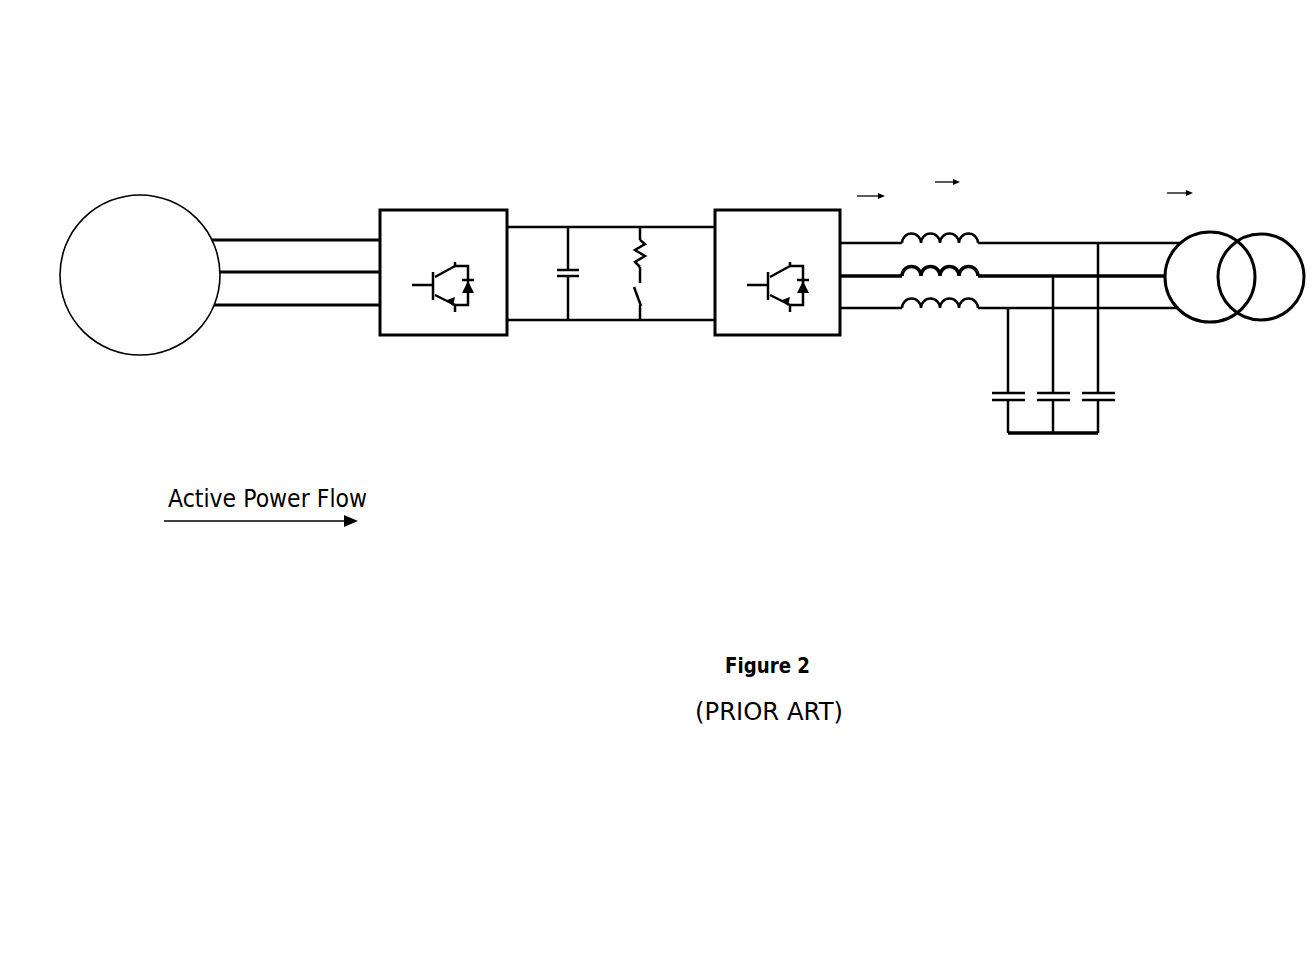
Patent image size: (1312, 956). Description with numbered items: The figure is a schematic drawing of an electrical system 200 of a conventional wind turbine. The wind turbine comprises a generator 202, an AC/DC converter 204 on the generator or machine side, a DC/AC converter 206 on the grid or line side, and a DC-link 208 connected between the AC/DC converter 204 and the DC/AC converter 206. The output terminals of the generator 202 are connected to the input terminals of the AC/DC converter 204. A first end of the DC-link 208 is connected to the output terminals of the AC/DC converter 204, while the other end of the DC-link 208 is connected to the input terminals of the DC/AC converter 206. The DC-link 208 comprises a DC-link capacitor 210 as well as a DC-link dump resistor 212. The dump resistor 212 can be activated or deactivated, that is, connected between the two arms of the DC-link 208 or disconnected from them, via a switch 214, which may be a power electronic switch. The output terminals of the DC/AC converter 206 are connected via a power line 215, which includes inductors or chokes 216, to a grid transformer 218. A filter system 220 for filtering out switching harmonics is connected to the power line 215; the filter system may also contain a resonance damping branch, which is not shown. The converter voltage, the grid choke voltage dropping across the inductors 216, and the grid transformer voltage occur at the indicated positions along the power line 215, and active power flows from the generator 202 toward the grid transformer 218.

The electrical system 200 is at (1076, 92).
The generator 202 is at (147, 355).
The AC/DC converter 204 is at (442, 208).
The DC/AC converter 206 is at (775, 208).
The DC-link 208 is at (708, 332).
The DC-link capacitor 210 is at (573, 268).
The DC-link dump resistor 212 is at (647, 242).
The switch 214 is at (643, 292).
The power line 215 is at (1130, 312).
The inductors/chokes 216 is at (909, 333).
The grid transformer 218 is at (1213, 233).
The filter system 220 is at (1100, 445).